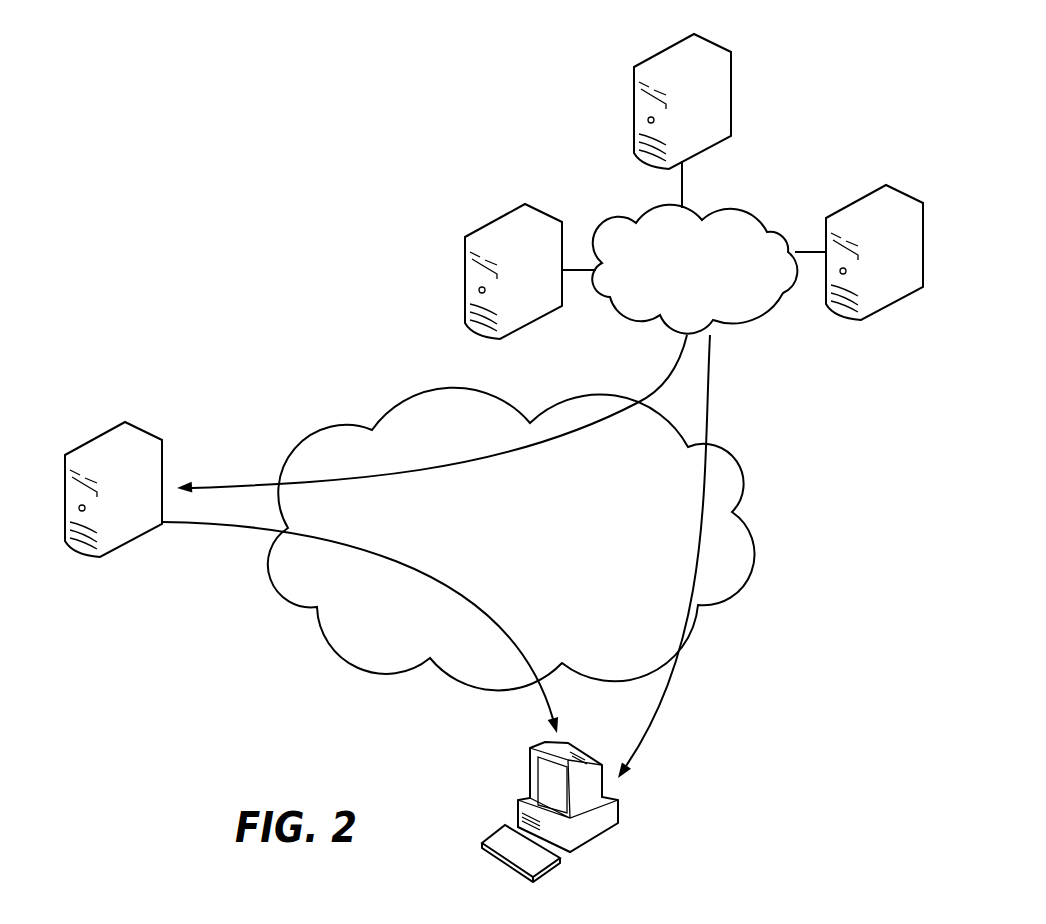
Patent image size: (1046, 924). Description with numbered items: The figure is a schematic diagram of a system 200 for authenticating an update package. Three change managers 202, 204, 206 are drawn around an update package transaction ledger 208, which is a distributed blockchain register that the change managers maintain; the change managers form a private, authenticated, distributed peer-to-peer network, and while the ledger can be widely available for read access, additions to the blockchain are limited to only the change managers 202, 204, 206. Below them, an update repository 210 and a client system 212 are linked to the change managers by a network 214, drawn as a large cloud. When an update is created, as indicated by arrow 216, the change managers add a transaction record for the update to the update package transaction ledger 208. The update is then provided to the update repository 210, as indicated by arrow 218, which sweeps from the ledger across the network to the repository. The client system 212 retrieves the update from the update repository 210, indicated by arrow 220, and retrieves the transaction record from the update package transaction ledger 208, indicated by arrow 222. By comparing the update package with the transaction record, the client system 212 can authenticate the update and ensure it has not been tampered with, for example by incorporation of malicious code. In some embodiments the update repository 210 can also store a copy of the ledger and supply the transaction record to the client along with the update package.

The system for authenticating an update package 200 is at (357, 124).
The change manager 202 is at (497, 222).
The change manager 204 is at (668, 49).
The change manager 206 is at (867, 197).
The update package transaction ledger 208 is at (694, 269).
The update repository 210 is at (88, 443).
The client system 212 is at (530, 768).
The network 214 is at (511, 539).
The arrow 216 is at (624, 192).
The arrow 218 is at (230, 485).
The arrow 220 is at (248, 528).
The arrow 222 is at (705, 493).